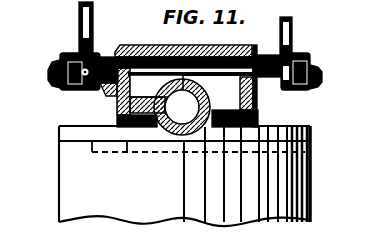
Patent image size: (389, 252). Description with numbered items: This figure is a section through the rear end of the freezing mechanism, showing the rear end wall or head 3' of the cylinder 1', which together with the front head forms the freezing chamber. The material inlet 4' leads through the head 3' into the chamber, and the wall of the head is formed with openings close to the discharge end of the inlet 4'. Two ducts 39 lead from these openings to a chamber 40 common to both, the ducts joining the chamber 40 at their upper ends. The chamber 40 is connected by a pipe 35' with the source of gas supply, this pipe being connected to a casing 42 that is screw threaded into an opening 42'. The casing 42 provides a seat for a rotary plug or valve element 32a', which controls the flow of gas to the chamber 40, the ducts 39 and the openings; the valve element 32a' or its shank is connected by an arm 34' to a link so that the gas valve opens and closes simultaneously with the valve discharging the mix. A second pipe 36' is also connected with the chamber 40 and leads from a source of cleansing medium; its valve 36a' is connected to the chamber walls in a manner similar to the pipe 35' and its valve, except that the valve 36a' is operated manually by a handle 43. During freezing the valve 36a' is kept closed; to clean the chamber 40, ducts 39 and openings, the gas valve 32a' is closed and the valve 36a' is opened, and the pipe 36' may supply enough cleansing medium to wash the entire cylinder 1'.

The cylinder 1' is at (199, 176).
The rear end wall or head 3' is at (201, 131).
The inlet 4' is at (182, 107).
The rotary plug or valve element 32a' is at (318, 69).
The arm 34' is at (334, 77).
The pipe 35' is at (313, 35).
The pipe 36' is at (101, 28).
The valve 36a' is at (53, 88).
The ducts 39 is at (117, 114).
The chamber 40 is at (156, 94).
The opening 42' is at (189, 42).
The casing 42 is at (215, 86).
The handle 43 is at (50, 63).